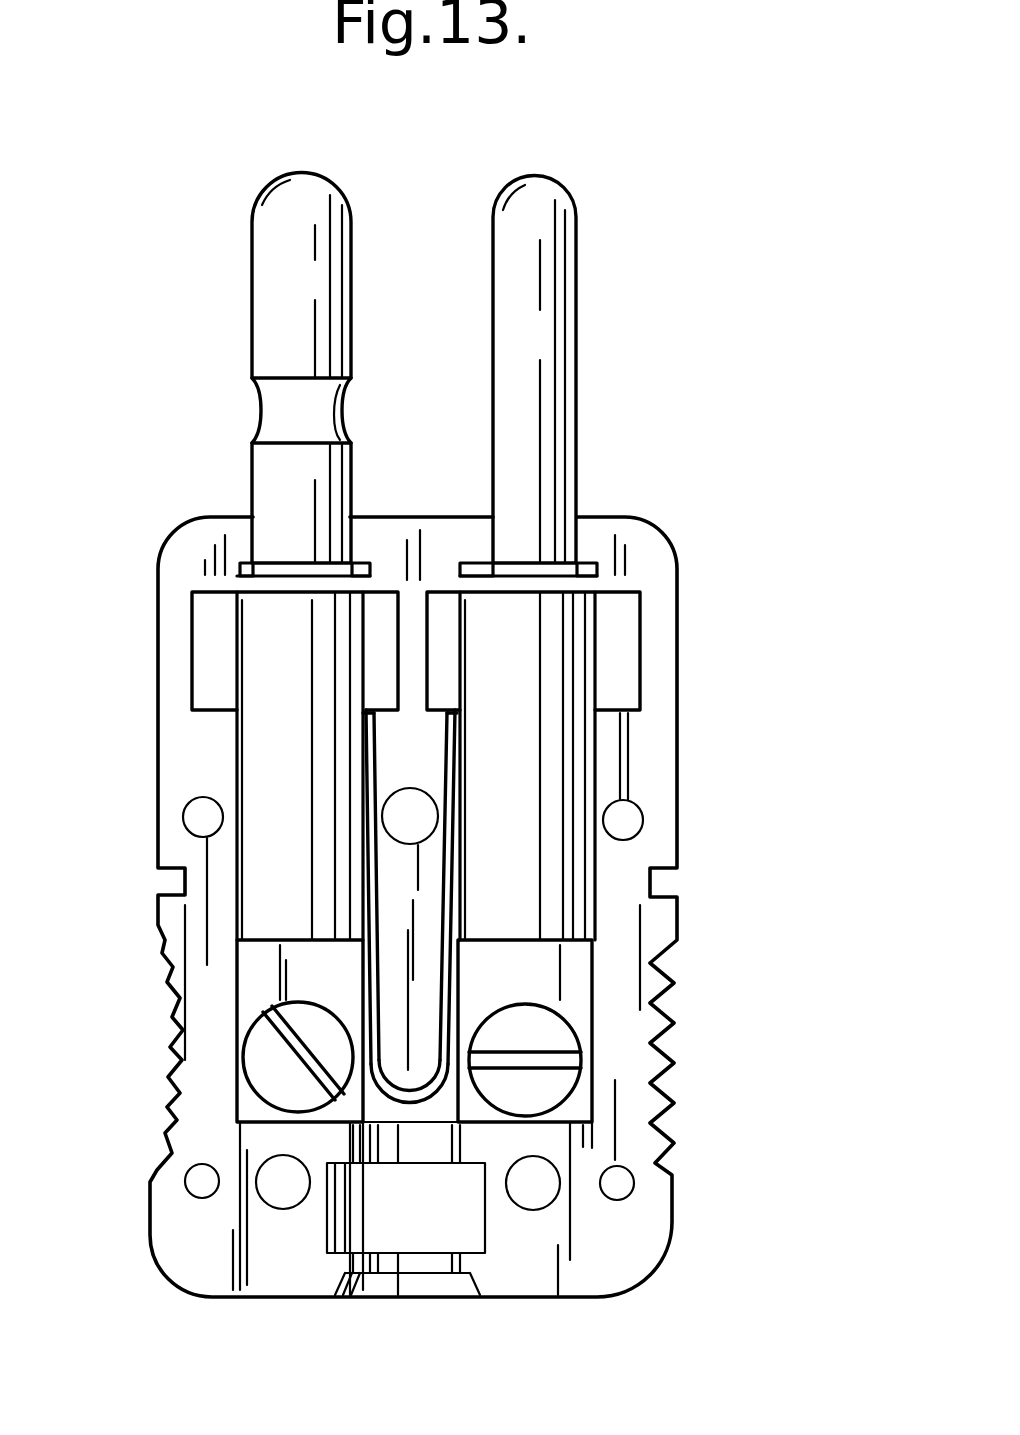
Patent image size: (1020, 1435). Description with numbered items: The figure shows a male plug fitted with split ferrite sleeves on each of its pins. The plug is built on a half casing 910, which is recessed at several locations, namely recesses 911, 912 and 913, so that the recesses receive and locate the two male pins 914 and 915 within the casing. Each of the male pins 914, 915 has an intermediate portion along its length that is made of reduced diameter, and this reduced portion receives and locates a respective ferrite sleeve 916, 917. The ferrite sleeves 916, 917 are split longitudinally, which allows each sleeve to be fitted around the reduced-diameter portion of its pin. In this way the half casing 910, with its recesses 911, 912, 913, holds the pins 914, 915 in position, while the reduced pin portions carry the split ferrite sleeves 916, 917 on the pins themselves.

The half casing 910 is at (682, 910).
The recess 911 is at (575, 775).
The recess 912 is at (597, 608).
The recess 913 is at (258, 566).
The male pin 914 is at (578, 410).
The male pin 915 is at (258, 398).
The ferrite sleeve 916 is at (565, 668).
The ferrite sleeve 917 is at (265, 655).